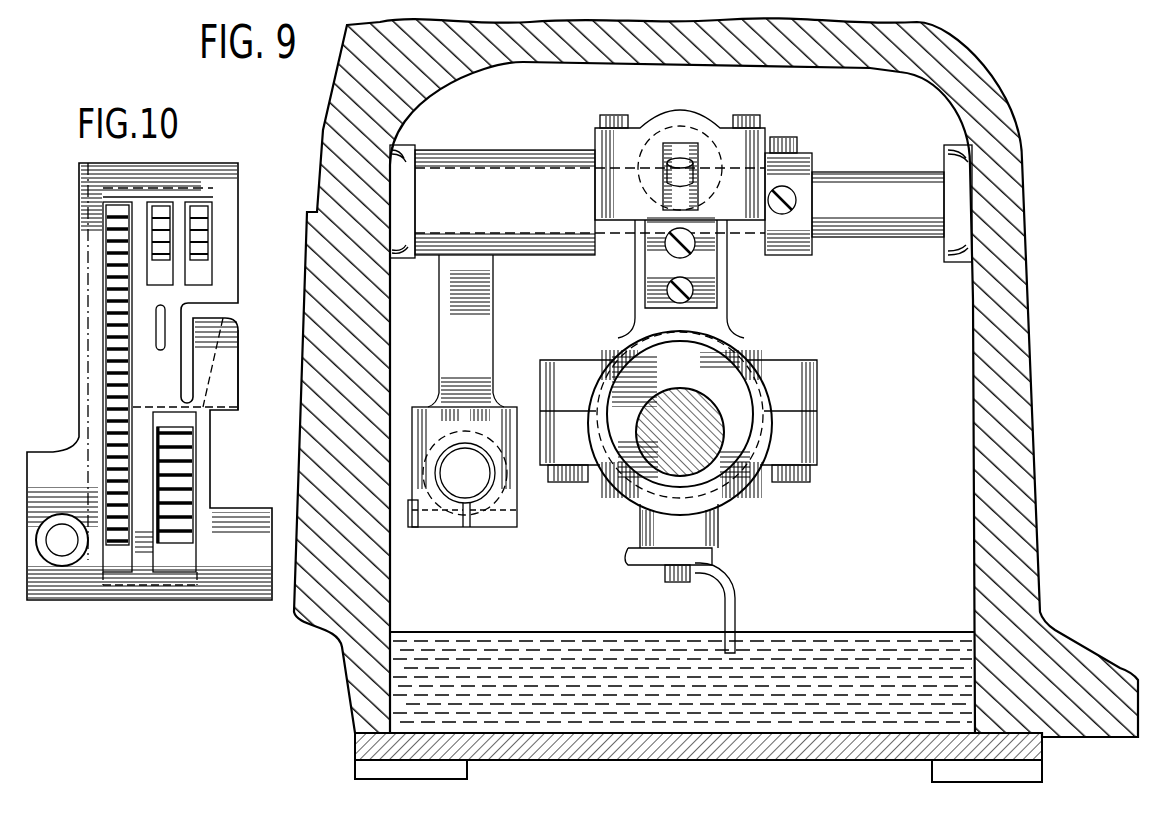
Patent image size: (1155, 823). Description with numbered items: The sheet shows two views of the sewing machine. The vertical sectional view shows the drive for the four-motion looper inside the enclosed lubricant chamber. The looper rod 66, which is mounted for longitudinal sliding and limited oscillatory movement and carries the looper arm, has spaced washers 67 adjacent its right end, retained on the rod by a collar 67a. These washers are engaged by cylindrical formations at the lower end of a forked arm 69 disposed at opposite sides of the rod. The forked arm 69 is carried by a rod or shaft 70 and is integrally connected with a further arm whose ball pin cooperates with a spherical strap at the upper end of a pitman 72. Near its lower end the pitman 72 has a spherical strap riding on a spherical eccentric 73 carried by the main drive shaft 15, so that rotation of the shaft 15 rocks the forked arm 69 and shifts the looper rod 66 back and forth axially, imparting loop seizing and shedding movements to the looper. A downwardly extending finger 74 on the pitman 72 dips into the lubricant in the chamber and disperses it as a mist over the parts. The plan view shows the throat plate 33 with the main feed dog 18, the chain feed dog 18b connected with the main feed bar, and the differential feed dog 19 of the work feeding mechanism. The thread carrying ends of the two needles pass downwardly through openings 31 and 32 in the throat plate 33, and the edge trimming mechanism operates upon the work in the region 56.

In FIG. 9, the rod or shaft 70 is at (848, 188).
In FIG. 9, the forked arm 69 is at (487, 310).
In FIG. 9, the spaced washers 67 is at (443, 530).
In FIG. 9, the looper rod 66 is at (478, 486).
In FIG. 9, the collar 67a is at (425, 530).
In FIG. 9, the pitman 72 is at (712, 320).
In FIG. 9, the spherical eccentric 73 is at (717, 374).
In FIG. 9, the main drive shaft 15 is at (673, 406).
In FIG. 9, the finger 74 is at (733, 596).
In FIG. 10, the main feed dog 18 is at (110, 287).
In FIG. 10, the chain feed dog 18b is at (200, 222).
In FIG. 10, the opening 31 is at (160, 328).
In FIG. 10, the opening 32 is at (185, 343).
In FIG. 10, the region 56 is at (220, 443).
In FIG. 10, the differential feed dog 19 is at (180, 480).
In FIG. 10, the throat plate 33 is at (63, 598).